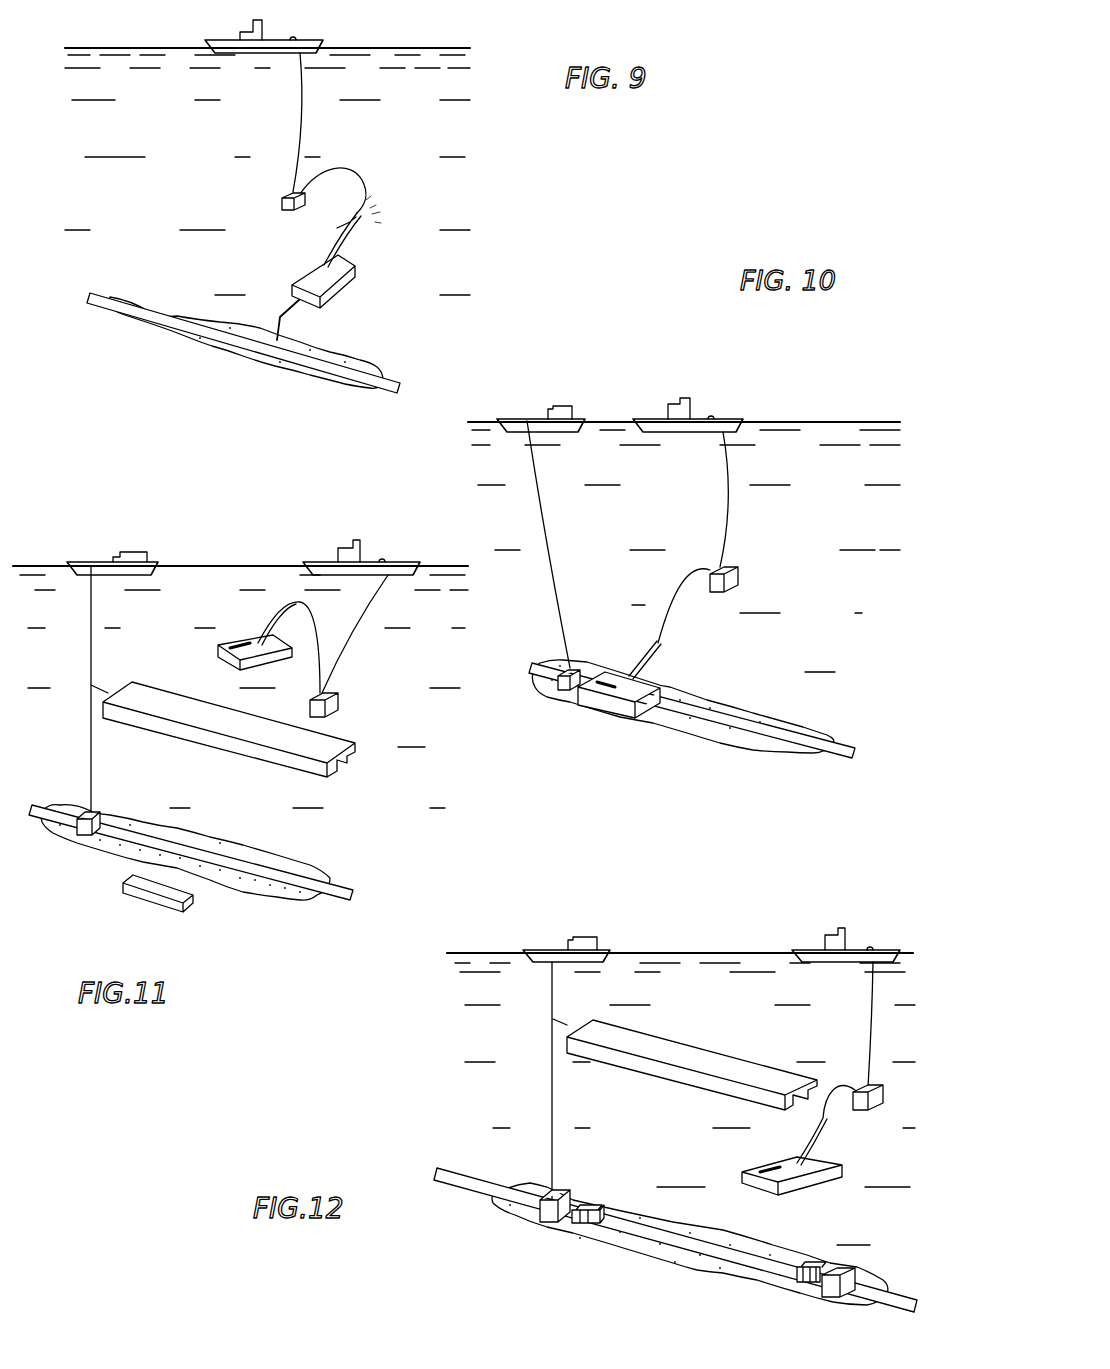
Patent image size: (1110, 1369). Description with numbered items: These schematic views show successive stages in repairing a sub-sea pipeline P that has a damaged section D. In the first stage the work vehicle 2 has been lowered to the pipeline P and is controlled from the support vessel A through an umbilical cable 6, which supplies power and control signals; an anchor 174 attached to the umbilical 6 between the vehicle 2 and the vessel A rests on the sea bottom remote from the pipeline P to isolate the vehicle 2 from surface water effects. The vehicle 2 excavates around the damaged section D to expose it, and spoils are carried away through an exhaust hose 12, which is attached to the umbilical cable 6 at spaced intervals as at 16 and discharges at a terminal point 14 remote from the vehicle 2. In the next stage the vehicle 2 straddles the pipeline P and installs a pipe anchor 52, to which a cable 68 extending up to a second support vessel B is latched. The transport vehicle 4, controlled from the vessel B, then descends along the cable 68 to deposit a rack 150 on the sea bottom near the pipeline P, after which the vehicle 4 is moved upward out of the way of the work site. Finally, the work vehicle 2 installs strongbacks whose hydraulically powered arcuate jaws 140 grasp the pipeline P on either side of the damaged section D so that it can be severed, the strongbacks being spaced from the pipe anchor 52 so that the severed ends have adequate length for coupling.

In FIG. 9, the work vehicle 2 is at (352, 283).
In FIG. 10, the work vehicle 2 is at (643, 688).
In FIG. 11, the work vehicle 2 is at (248, 628).
In FIG. 12, the work vehicle 2 is at (820, 1163).
In FIG. 11, the transport vehicle 4 is at (227, 758).
In FIG. 12, the transport vehicle 4 is at (710, 1045).
In FIG. 9, the umbilical cable 6 is at (365, 172).
In FIG. 9, the exhaust hose 12 is at (349, 223).
In FIG. 9, the terminal point 14 is at (359, 219).
In FIG. 9, the attachment point of hose to umbilical 16 is at (338, 222).
In FIG. 10, the pipe anchor 52 is at (573, 667).
In FIG. 11, the pipe anchor 52 is at (98, 812).
In FIG. 12, the pipe anchor 52 is at (560, 1195).
In FIG. 10, the cable 68 is at (553, 545).
In FIG. 11, the cable 68 is at (89, 738).
In FIG. 12, the arcuate jaws 140 is at (590, 1222).
In FIG. 11, the rack 150 is at (162, 907).
In FIG. 9, the anchor 174 is at (280, 199).
In FIG. 10, the anchor 174 is at (740, 582).
In FIG. 11, the anchor 174 is at (340, 707).
In FIG. 12, the anchor 174 is at (882, 1098).
In FIG. 10, the support vessel A is at (706, 400).
In FIG. 11, the support vessel A is at (357, 533).
In FIG. 10, the support vessel B is at (565, 400).
In FIG. 11, the support vessel B is at (138, 542).
In FIG. 9, the damaged section D is at (247, 340).
In FIG. 10, the damaged section D is at (740, 723).
In FIG. 12, the damaged section D is at (653, 1240).
In FIG. 9, the pipeline P is at (392, 372).
In FIG. 10, the pipeline P is at (841, 744).
In FIG. 11, the pipeline P is at (341, 884).
In FIG. 12, the pipeline P is at (465, 1168).